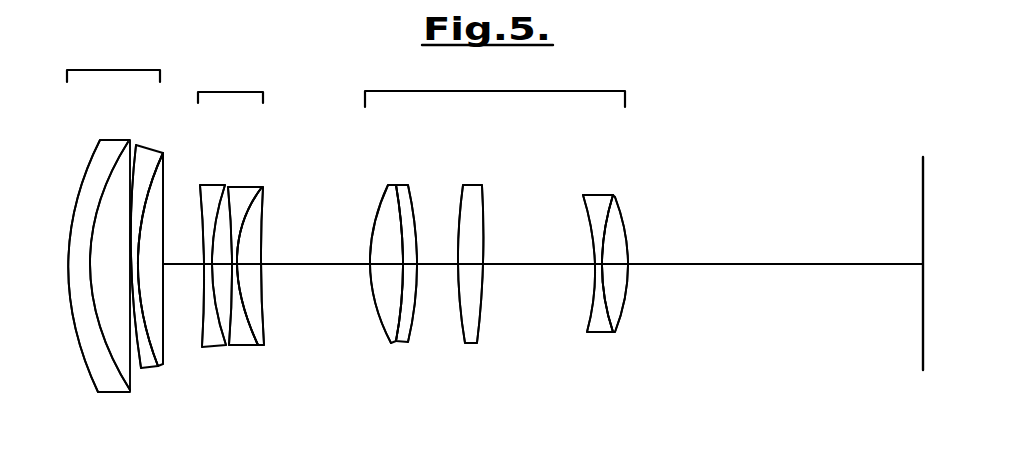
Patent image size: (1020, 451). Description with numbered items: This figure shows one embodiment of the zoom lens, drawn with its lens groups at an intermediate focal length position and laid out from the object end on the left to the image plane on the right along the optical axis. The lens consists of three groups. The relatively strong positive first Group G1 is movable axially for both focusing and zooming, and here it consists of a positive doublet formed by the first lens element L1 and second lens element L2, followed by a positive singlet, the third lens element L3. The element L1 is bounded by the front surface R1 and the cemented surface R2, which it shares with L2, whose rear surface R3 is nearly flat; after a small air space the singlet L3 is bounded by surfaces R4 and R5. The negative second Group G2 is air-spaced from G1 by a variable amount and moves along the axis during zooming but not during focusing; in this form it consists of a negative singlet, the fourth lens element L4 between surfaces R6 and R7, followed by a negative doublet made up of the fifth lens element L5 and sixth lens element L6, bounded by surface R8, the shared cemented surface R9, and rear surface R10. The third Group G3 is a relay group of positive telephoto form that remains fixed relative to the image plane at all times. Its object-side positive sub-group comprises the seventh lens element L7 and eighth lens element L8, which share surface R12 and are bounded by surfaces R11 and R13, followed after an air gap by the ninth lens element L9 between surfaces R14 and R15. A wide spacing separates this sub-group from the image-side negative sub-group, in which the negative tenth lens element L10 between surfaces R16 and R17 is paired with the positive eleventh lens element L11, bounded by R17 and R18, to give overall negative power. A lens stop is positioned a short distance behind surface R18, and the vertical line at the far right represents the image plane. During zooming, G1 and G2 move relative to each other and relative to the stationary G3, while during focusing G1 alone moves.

The first lens group G1 is at (113, 62).
The second lens group G2 is at (230, 83).
The third lens group G3 is at (495, 84).
The first lens element L1 is at (97, 165).
The second lens element L2 is at (127, 172).
The third lens element L3 is at (160, 170).
The fourth lens element L4 is at (212, 203).
The fifth lens element L5 is at (243, 193).
The sixth lens element L6 is at (267, 220).
The seventh lens element L7 is at (382, 215).
The eighth lens element L8 is at (402, 205).
The ninth lens element L9 is at (472, 207).
The tenth lens element L10 is at (595, 208).
The eleventh lens element L11 is at (618, 250).
The first lens surface R1 is at (88, 373).
The second lens surface R2 is at (120, 370).
The third lens surface R3 is at (135, 380).
The fourth lens surface R4 is at (154, 365).
The fifth lens surface R5 is at (163, 365).
The sixth lens surface R6 is at (203, 299).
The seventh lens surface R7 is at (223, 313).
The eighth lens surface R8 is at (228, 310).
The ninth lens surface R9 is at (247, 346).
The tenth lens surface R10 is at (264, 310).
The eleventh lens surface R11 is at (371, 311).
The twelfth lens surface R12 is at (395, 327).
The thirteenth lens surface R13 is at (412, 338).
The fourteenth lens surface R14 is at (458, 287).
The fifteenth lens surface R15 is at (484, 320).
The sixteenth lens surface R16 is at (592, 300).
The seventeenth lens surface R17 is at (612, 312).
The eighteenth lens surface R18 is at (627, 283).